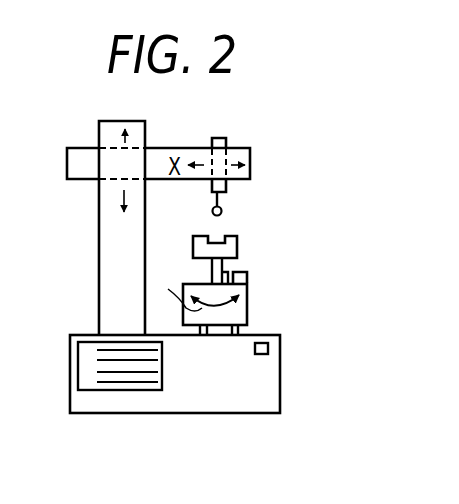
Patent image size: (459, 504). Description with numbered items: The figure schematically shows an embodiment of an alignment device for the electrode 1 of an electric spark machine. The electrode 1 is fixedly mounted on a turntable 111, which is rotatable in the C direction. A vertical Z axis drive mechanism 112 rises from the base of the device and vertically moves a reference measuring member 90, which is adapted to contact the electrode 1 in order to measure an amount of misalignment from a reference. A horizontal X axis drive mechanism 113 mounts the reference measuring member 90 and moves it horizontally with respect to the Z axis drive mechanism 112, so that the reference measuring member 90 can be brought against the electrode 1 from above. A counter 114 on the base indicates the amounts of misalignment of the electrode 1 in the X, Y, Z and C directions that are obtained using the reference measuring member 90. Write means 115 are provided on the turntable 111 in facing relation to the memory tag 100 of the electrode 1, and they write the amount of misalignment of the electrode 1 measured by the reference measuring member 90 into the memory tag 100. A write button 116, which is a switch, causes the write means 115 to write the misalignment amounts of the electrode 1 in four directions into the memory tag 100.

The electrode 1 is at (238, 245).
The reference measuring member 90 is at (221, 203).
The memory tag 100 is at (226, 271).
The turntable 111 is at (248, 312).
The Z axis drive mechanism 112 is at (99, 262).
The X axis drive mechanism 113 is at (250, 148).
The counter 114 is at (162, 362).
The write means 115 is at (248, 277).
The write button 116 is at (268, 350).